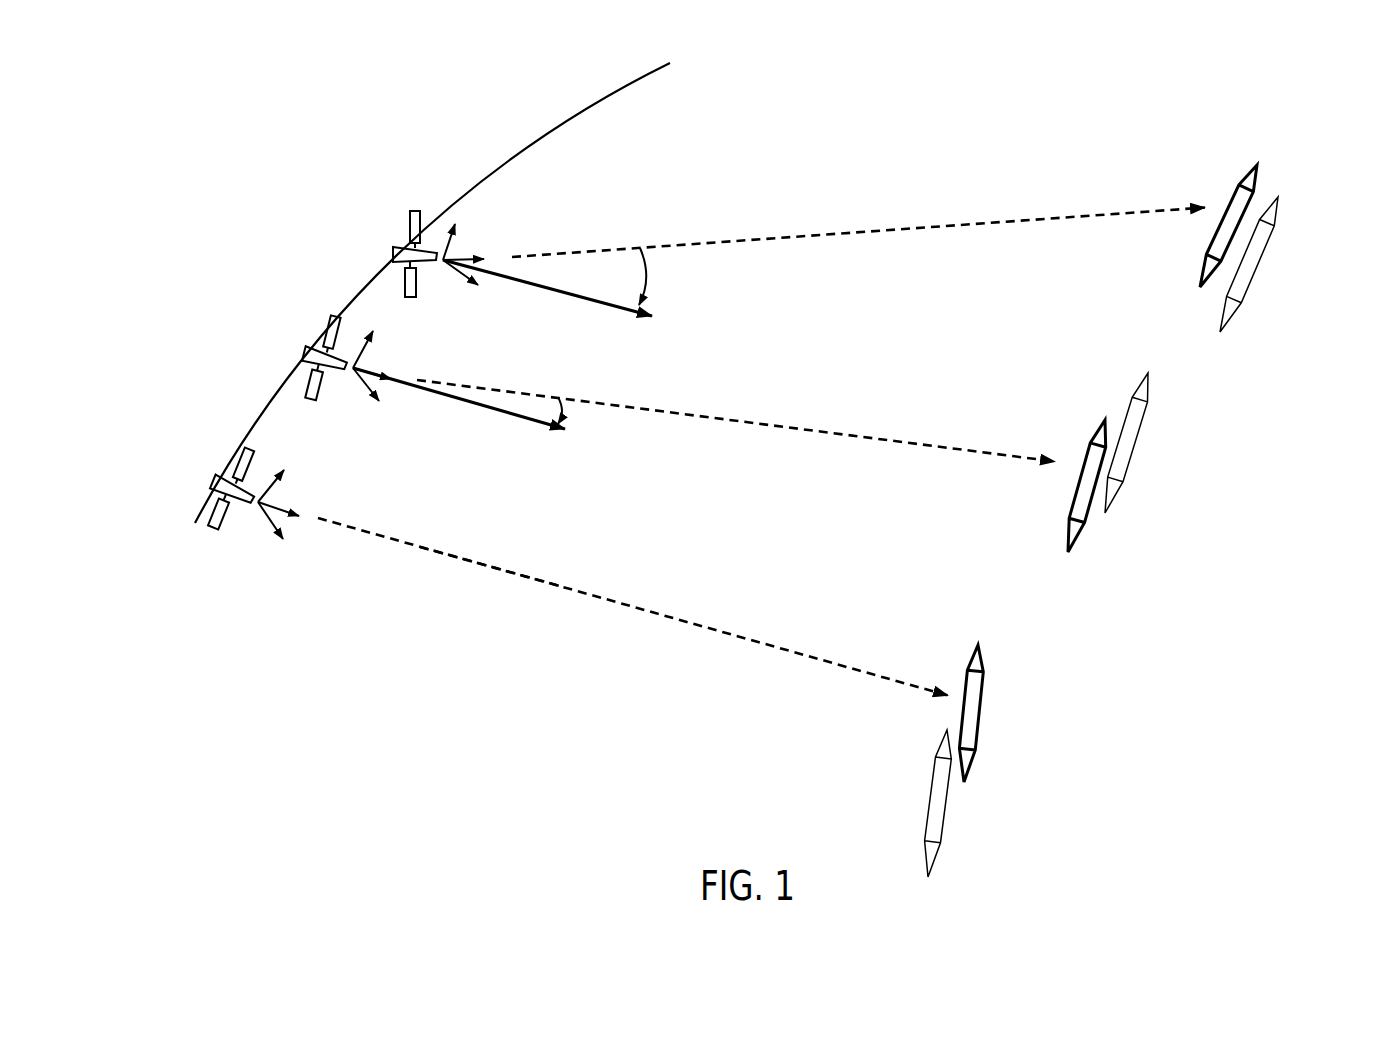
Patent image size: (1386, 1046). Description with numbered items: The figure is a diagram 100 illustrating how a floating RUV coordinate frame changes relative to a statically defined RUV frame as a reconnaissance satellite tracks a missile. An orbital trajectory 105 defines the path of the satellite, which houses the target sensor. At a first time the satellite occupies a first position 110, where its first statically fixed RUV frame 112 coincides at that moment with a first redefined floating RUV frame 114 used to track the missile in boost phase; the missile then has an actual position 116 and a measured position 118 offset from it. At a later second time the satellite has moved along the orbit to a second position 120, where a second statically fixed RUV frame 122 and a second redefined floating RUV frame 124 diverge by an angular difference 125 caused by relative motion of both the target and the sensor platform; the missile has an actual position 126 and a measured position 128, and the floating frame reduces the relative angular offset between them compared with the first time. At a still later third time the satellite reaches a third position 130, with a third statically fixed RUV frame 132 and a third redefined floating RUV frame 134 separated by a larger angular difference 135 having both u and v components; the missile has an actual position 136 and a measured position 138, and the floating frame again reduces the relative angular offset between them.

The diagram 100 is at (408, 108).
The orbital trajectory 105 is at (622, 92).
The first position 110 is at (218, 485).
The first statically fixed RUV frame 112 is at (641, 618).
The first redefined floating RUV frame 114 is at (560, 577).
The actual position 116 is at (926, 810).
The measured position 118 is at (982, 729).
The second position 120 is at (306, 353).
The second statically fixed RUV frame 122 is at (416, 395).
The second redefined floating RUV frame 124 is at (799, 436).
The angular difference 125 is at (574, 414).
The actual position 126 is at (1131, 461).
The measured position 128 is at (1092, 432).
The third position 130 is at (400, 251).
The third statically fixed RUV frame 132 is at (520, 290).
The third redefined floating RUV frame 134 is at (831, 243).
The angular difference 135 is at (662, 285).
The actual position 136 is at (1270, 243).
The measured position 138 is at (1232, 190).